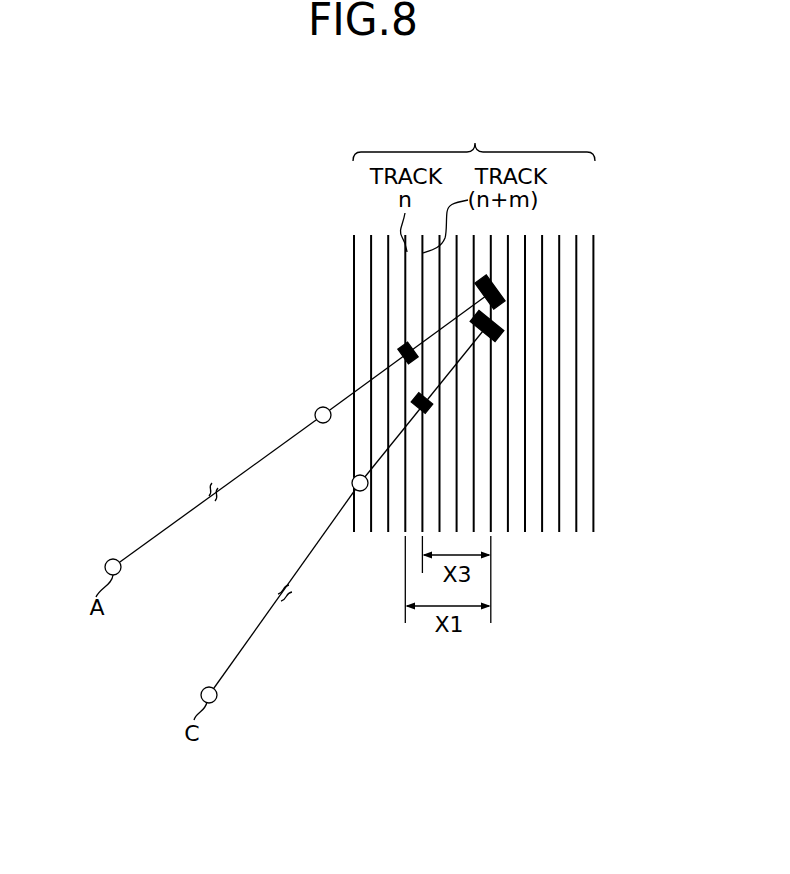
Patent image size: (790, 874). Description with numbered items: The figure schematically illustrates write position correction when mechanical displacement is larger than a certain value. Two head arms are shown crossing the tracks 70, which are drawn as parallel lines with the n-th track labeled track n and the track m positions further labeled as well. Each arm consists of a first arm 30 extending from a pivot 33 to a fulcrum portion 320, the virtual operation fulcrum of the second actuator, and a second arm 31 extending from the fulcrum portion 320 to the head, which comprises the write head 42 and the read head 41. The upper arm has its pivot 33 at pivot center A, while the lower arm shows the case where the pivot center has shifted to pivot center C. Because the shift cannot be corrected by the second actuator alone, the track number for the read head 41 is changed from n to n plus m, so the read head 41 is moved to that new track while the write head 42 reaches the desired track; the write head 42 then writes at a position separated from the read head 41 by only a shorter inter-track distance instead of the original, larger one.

The tracks 70 is at (474, 137).
The write head 42 is at (478, 284).
The read head 41 is at (403, 348).
The second arm 31 is at (352, 393).
The fulcrum portion 320 is at (315, 416).
The first arm 30 is at (153, 537).
The pivot 33 is at (105, 563).